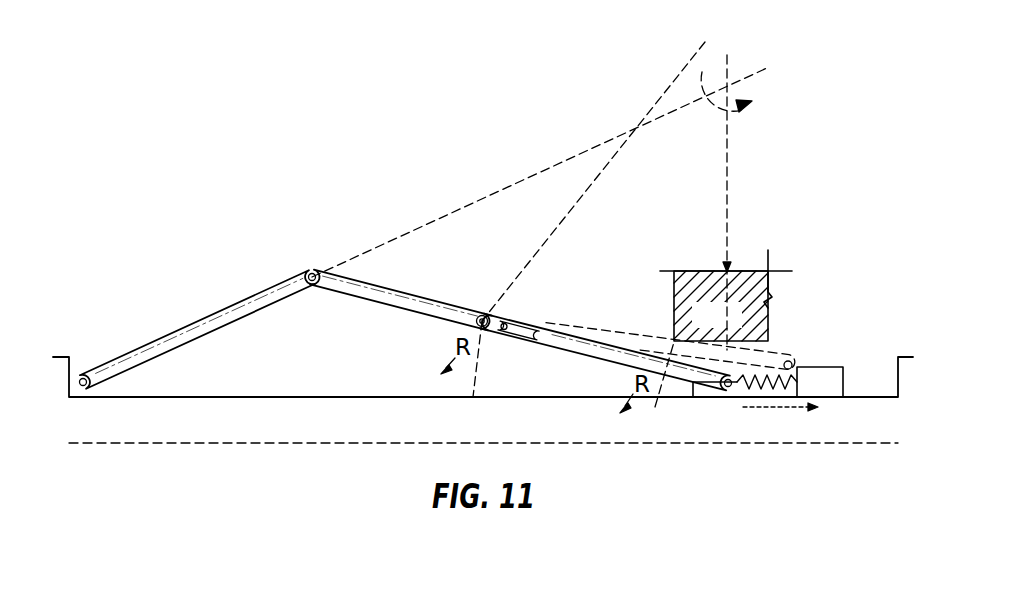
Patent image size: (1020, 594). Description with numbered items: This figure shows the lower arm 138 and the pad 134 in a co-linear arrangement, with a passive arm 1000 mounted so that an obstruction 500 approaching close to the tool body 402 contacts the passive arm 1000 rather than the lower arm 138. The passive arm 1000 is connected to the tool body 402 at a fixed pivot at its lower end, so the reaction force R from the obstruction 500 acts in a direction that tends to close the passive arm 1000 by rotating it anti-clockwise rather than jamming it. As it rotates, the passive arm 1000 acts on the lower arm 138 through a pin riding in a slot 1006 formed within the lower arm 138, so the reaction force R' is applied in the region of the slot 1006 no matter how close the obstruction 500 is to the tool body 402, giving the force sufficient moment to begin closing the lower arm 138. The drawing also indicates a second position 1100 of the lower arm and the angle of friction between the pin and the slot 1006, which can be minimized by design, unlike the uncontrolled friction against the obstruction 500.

The pad 134 is at (442, 307).
The lower arm 138 is at (578, 348).
The slot 1006 is at (512, 322).
The second arm in rotated position 1100 is at (673, 340).
The passive arm 1000 is at (784, 358).
The obstruction 500 is at (738, 325).
The tool body 402 is at (505, 433).